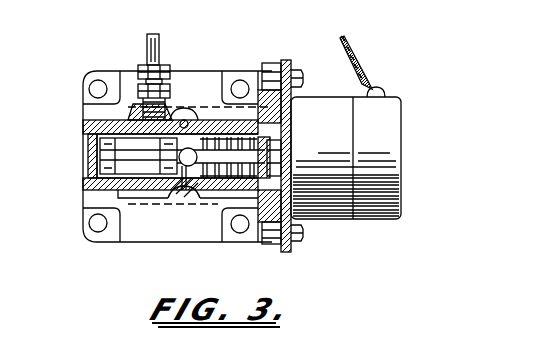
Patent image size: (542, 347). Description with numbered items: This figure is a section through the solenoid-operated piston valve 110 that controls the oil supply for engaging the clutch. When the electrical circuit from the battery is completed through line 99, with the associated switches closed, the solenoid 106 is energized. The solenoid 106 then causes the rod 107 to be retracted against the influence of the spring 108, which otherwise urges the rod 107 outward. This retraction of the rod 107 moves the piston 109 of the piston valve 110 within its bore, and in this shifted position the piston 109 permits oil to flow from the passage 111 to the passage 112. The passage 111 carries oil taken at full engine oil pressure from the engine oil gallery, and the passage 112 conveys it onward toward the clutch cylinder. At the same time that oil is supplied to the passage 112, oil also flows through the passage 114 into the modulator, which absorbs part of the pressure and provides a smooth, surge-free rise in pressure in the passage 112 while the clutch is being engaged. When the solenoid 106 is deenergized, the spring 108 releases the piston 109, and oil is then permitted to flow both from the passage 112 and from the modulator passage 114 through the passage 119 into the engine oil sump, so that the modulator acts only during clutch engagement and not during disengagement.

The line 99 is at (381, 32).
The solenoid 106 is at (393, 132).
The rod 107 is at (249, 192).
The spring 108 is at (209, 186).
The piston 109 is at (110, 148).
The piston valve 110 is at (138, 172).
The passage 111 is at (121, 109).
The passage 112 is at (185, 120).
The passage 114 is at (180, 197).
The passage 119 is at (216, 133).